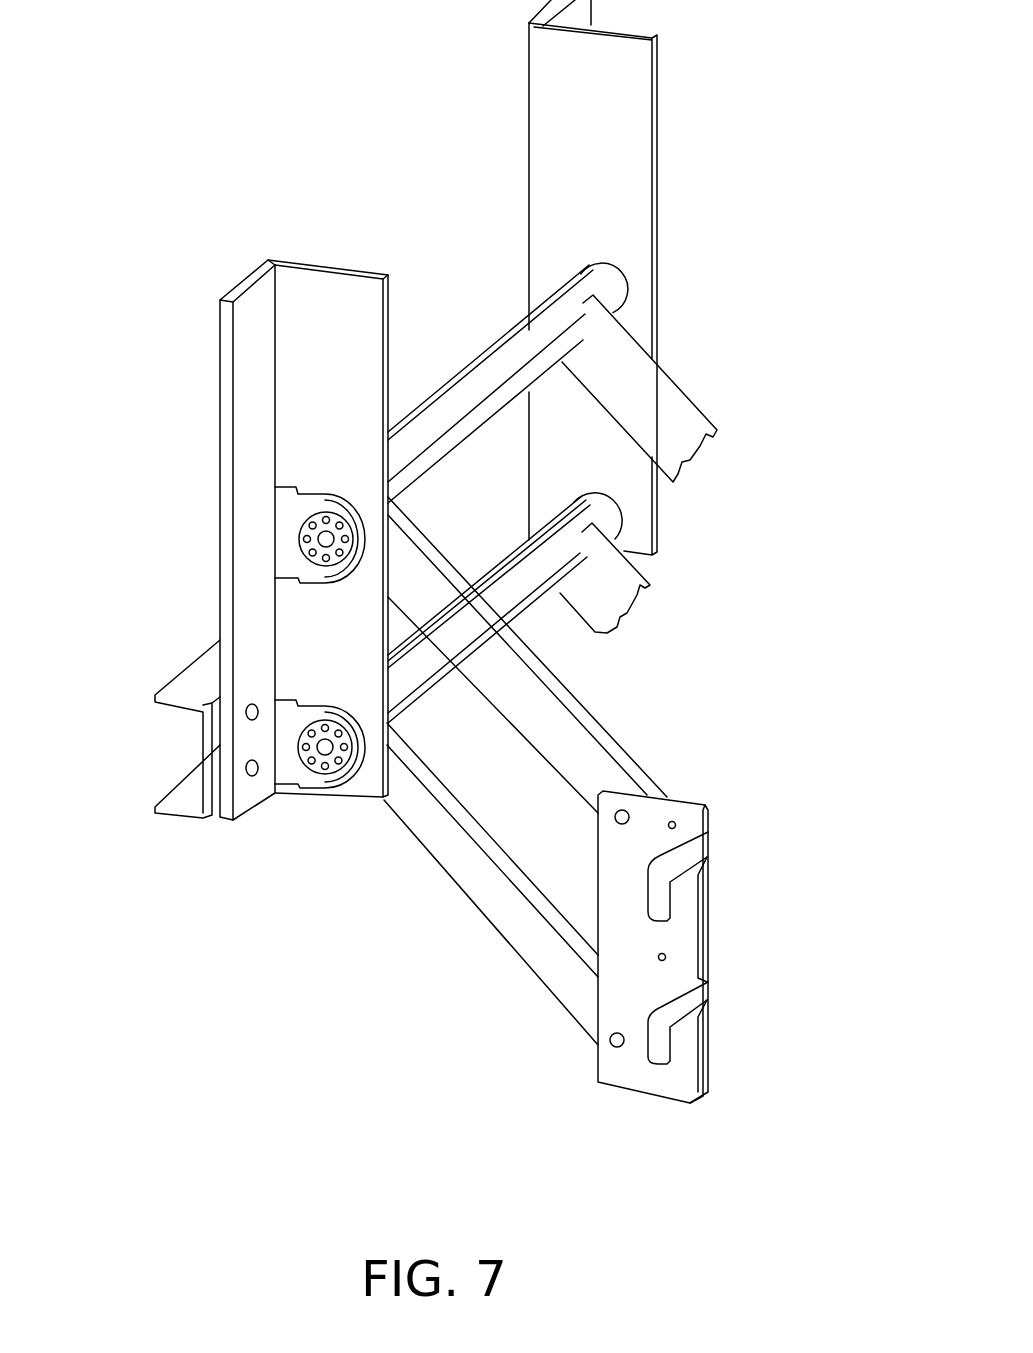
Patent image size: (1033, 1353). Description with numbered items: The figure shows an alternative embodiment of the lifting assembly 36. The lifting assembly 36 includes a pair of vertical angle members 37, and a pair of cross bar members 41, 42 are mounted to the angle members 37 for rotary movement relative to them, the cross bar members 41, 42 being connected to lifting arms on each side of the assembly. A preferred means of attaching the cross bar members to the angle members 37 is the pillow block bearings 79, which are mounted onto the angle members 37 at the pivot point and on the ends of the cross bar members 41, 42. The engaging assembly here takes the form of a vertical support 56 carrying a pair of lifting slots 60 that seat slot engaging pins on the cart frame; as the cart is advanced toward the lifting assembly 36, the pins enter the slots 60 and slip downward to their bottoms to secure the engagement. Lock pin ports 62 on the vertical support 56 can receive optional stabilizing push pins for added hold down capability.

The lifting assembly 36 is at (338, 877).
The vertical angle member 37 is at (638, 170).
The cross bar member 41 is at (505, 352).
The cross bar member 42 is at (547, 562).
The vertical support 56 is at (637, 943).
The lifting slot 60 is at (708, 838).
The lock pin port 62 is at (672, 821).
The pillow block bearing 79 is at (313, 712).